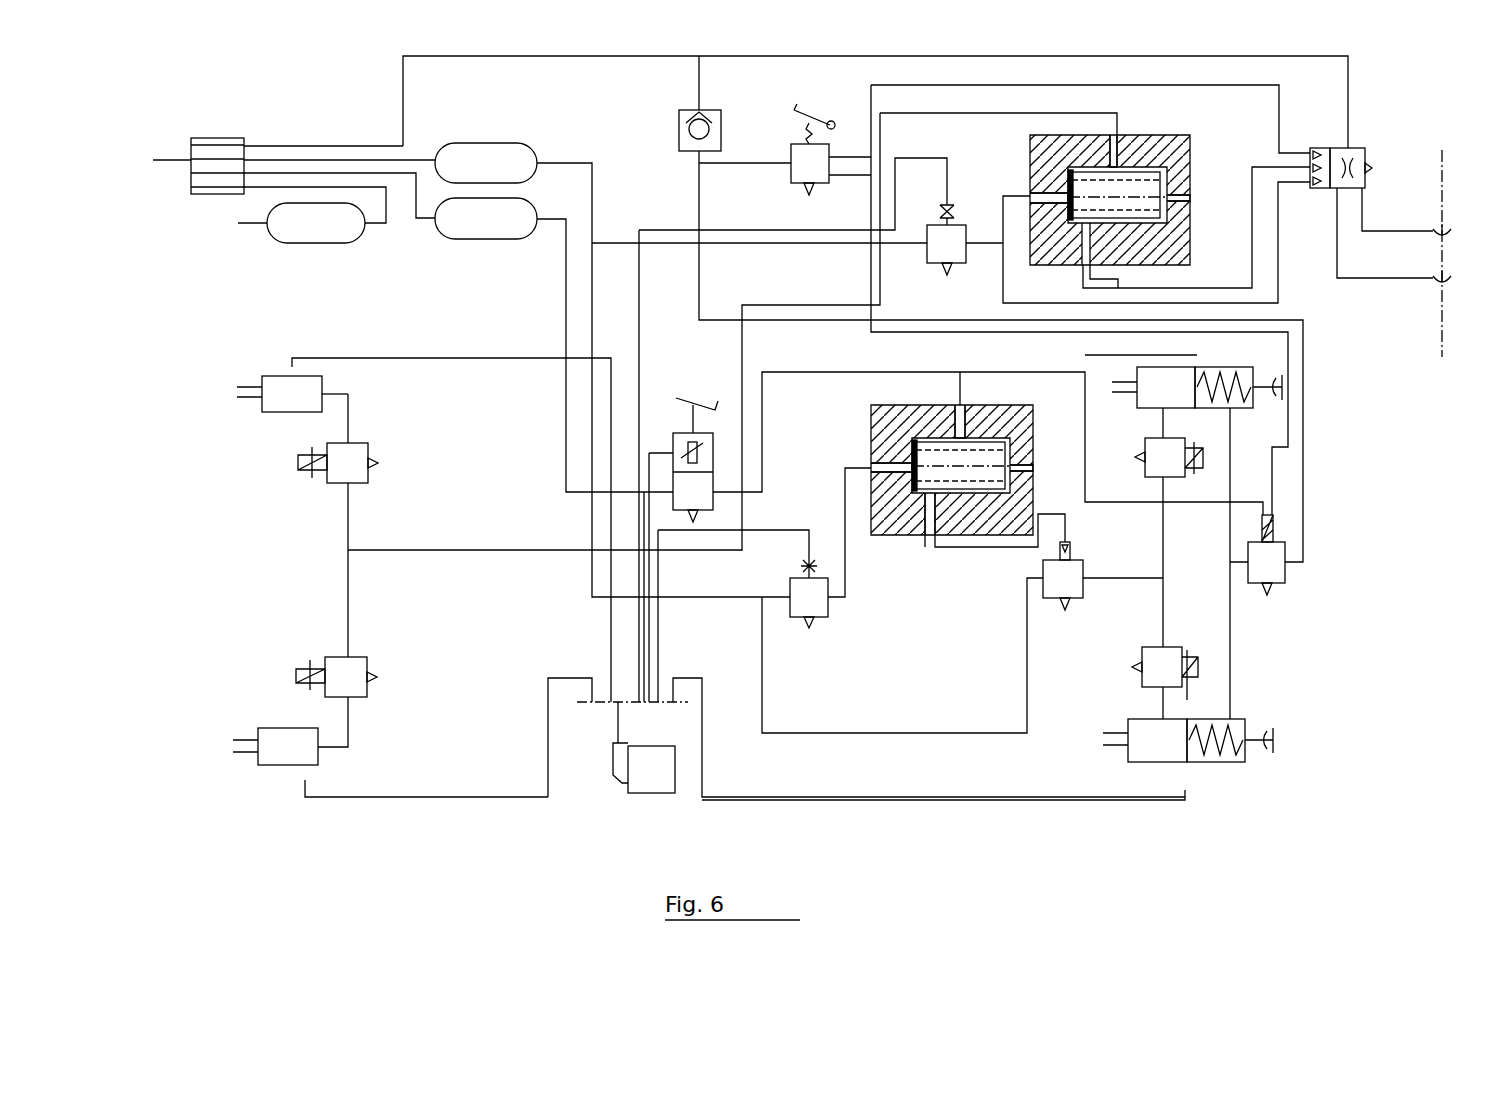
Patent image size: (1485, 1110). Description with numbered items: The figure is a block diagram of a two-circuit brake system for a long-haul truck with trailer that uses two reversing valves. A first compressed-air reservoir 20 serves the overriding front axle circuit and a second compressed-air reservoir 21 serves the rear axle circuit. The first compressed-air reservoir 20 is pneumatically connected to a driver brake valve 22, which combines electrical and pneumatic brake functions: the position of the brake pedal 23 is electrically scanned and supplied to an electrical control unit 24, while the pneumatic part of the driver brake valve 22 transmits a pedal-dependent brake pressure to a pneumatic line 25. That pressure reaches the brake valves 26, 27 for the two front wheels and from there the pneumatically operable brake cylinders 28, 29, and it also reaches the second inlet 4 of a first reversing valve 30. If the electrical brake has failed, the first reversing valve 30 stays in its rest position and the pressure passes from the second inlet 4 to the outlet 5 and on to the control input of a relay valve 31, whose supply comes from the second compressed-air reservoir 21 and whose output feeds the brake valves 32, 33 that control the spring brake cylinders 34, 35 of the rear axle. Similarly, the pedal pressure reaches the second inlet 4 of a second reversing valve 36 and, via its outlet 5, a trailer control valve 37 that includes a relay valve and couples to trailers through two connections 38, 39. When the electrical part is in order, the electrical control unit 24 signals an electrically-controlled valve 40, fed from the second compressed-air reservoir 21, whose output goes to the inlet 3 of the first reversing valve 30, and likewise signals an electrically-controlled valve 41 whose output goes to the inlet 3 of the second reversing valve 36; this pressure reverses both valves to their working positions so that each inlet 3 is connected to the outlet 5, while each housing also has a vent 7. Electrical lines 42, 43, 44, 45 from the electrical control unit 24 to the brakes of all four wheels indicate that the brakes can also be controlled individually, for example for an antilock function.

The inlet 3 is at (1032, 196).
The second inlet 4 is at (1117, 140).
The outlet 5 is at (940, 540).
The vent 7 is at (1190, 200).
The first compressed-air reservoir 20 is at (514, 237).
The second compressed-air reservoir 21 is at (528, 152).
The driver brake valve 22 is at (673, 434).
The brake pedal 23 is at (686, 396).
The electrical control unit 24 is at (650, 783).
The pneumatic line 25 is at (456, 550).
The brake valve 26 is at (364, 447).
The brake valve 27 is at (360, 664).
The brake cylinder 28 is at (270, 382).
The brake cylinder 29 is at (266, 736).
The first reversing valve 30 is at (893, 522).
The relay valve 31 is at (1080, 566).
The brake valve 32 is at (1147, 473).
The brake valve 33 is at (1147, 676).
The spring brake cylinder 34 is at (1147, 374).
The spring brake cylinder 35 is at (1148, 742).
The second reversing valve 36 is at (1047, 256).
The trailer control valve 37 is at (1325, 148).
The connection 38 is at (1446, 234).
The connection 39 is at (1446, 282).
The electrically-controlled valve 40 is at (820, 612).
The electrically-controlled valve 41 is at (930, 258).
The electrical line 42 is at (433, 358).
The electrical line 43 is at (415, 799).
The electrical line 44 is at (1197, 355).
The electrical line 45 is at (1185, 790).